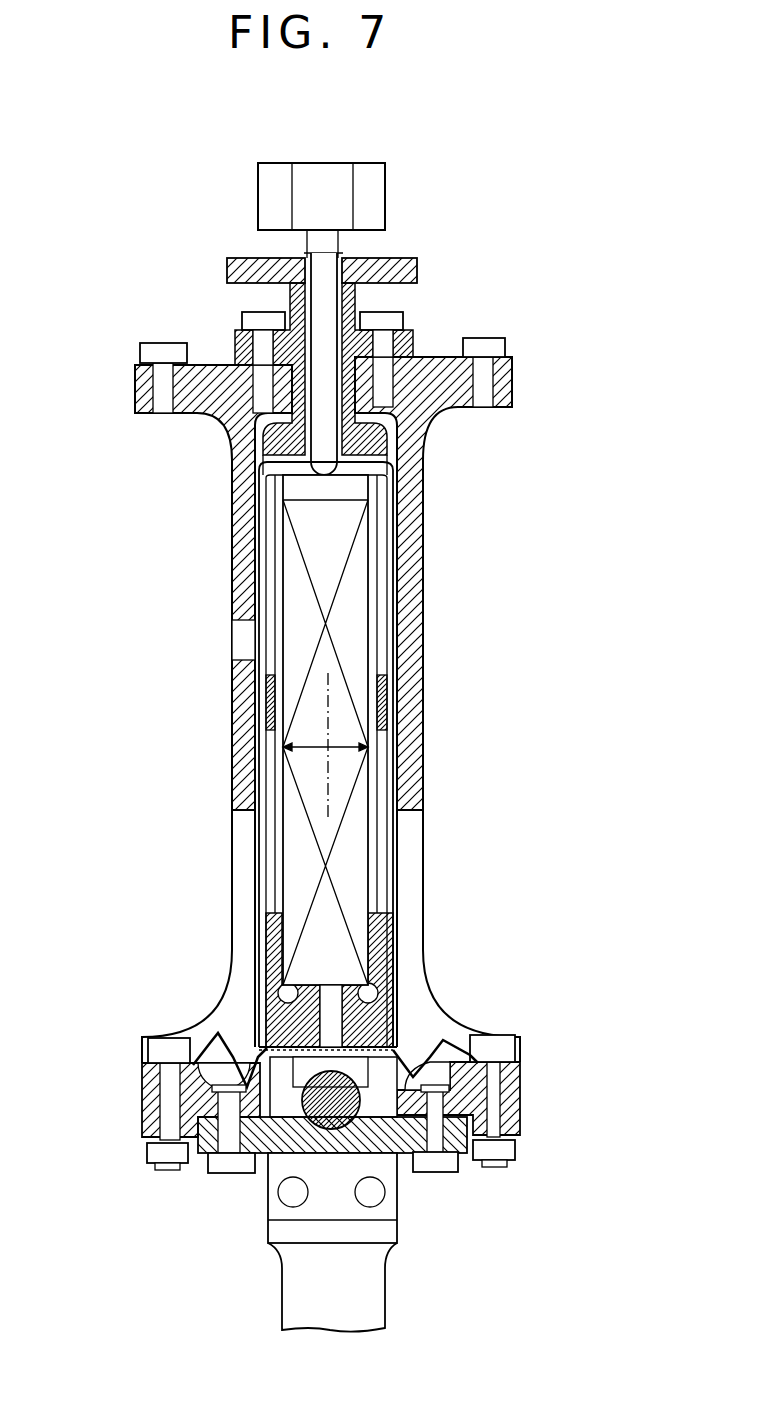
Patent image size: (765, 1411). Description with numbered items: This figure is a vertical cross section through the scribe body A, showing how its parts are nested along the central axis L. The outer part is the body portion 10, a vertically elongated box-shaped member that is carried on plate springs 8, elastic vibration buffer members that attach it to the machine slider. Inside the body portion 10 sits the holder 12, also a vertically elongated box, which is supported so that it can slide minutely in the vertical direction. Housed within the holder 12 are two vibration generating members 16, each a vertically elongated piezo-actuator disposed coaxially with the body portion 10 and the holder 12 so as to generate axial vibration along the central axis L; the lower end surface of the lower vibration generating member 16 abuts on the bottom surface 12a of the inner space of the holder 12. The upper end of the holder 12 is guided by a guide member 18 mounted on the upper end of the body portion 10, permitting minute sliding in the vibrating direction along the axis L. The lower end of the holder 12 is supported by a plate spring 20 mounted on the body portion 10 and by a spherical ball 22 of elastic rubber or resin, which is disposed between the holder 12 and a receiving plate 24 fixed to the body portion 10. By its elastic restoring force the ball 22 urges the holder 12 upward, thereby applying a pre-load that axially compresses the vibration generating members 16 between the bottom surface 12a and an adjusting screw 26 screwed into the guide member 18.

The plate springs 8 is at (138, 363).
The body portion 10 is at (422, 568).
The holder 12 is at (393, 480).
The bottom surface 12a is at (347, 982).
The vibration generating members 16 is at (302, 583).
The guide member 18 is at (360, 442).
The plate spring 20 is at (440, 1037).
The spherical ball 22 is at (337, 1153).
The receiving plate 24 is at (360, 1140).
The adjusting screw 26 is at (325, 314).
The central axis L is at (328, 765).
The scribe body A is at (448, 620).